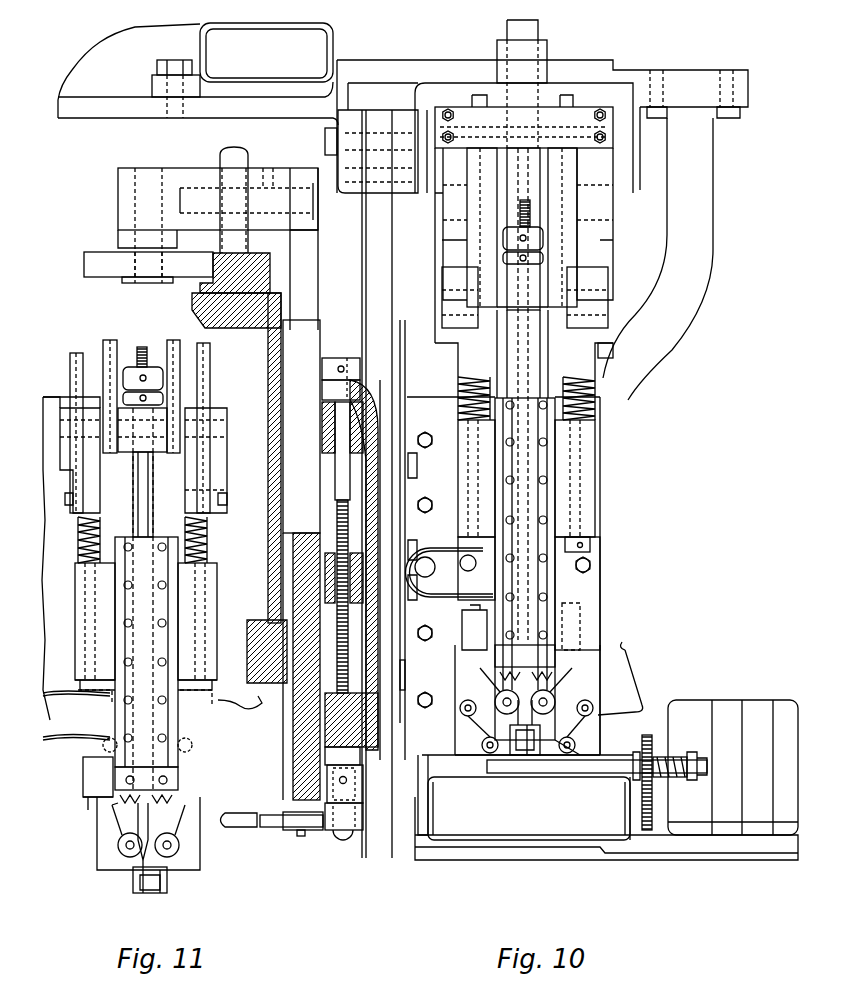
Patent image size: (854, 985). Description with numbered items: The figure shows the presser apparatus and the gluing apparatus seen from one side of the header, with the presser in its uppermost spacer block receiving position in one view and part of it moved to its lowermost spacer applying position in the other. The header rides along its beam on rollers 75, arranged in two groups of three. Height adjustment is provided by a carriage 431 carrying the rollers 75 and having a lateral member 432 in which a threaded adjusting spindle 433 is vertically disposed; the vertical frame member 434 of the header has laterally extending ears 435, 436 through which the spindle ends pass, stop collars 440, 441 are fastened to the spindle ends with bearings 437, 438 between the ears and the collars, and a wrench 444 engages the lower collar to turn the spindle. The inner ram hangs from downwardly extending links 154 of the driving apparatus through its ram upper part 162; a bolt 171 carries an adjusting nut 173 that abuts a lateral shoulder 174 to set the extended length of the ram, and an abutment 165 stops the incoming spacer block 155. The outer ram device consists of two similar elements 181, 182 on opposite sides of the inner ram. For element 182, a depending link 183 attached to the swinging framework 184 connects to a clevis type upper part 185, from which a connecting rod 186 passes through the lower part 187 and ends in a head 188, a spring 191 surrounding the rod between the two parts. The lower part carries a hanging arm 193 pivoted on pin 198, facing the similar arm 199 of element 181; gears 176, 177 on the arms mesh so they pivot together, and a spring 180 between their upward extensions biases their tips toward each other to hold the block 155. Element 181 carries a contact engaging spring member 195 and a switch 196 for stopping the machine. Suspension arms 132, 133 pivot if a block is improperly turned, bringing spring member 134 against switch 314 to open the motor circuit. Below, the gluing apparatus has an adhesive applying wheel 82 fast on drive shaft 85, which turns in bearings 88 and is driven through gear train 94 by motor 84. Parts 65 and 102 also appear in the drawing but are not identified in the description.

In FIG. 11, the frame plate 65 is at (268, 333).
In FIG. 11, the rollers 75 is at (248, 160).
In FIG. 10, the rollers 75 is at (405, 668).
In FIG. 10, the adhesive applying wheel 82 is at (540, 775).
In FIG. 10, the motor 84 is at (735, 700).
In FIG. 10, the drive shaft 85 is at (680, 777).
In FIG. 10, the spaced bearings 88 is at (575, 755).
In FIG. 10, the gear train 94 is at (655, 742).
In FIG. 10, the shaft 102 is at (538, 35).
In FIG. 11, the suspension arm 132 is at (83, 770).
In FIG. 10, the suspension arm 132 is at (470, 733).
In FIG. 11, the suspension arm 133 is at (192, 747).
In FIG. 10, the suspension arm 133 is at (590, 730).
In FIG. 11, the spring member 134 is at (228, 708).
In FIG. 10, the spring member 134 is at (628, 660).
In FIG. 11, the downwardly extending links 154 is at (107, 340).
In FIG. 10, the downwardly extending links 154 is at (490, 197).
In FIG. 11, the spacer block 155 is at (150, 893).
In FIG. 10, the ram upper part 162 is at (560, 358).
In FIG. 11, the abutment 165 is at (133, 878).
In FIG. 10, the abutment 165 is at (524, 760).
In FIG. 11, the bolt 171 is at (140, 347).
In FIG. 10, the bolt 171 is at (526, 200).
In FIG. 11, the adjusting nut 173 is at (155, 367).
In FIG. 10, the adjusting nut 173 is at (543, 258).
In FIG. 11, the lateral shoulder 174 is at (163, 398).
In FIG. 10, the lateral shoulder 174 is at (503, 258).
In FIG. 11, the gear 176 is at (179, 845).
In FIG. 10, the gear 176 is at (568, 695).
In FIG. 11, the gear 177 is at (118, 843).
In FIG. 10, the gear 177 is at (495, 690).
In FIG. 11, the spring 180 is at (180, 800).
In FIG. 10, the spring 180 is at (503, 657).
In FIG. 10, the outer ram element 181 is at (458, 580).
In FIG. 10, the outer ram element 182 is at (600, 578).
In FIG. 11, the depending link 183 is at (72, 353).
In FIG. 10, the depending link 183 is at (455, 240).
In FIG. 10, the swinging framework 184 is at (575, 110).
In FIG. 10, the clevis type upper part 185 is at (600, 290).
In FIG. 11, the connecting rod 186 is at (200, 577).
In FIG. 10, the connecting rod 186 is at (580, 437).
In FIG. 11, the lower part 187 is at (215, 615).
In FIG. 10, the lower part 187 is at (595, 490).
In FIG. 10, the head 188 is at (590, 545).
In FIG. 11, the spring 191 is at (207, 540).
In FIG. 10, the spring 191 is at (458, 388).
In FIG. 11, the hanging arm 193 is at (167, 885).
In FIG. 10, the hanging arm 193 is at (540, 760).
In FIG. 11, the contact engaging spring member 195 is at (80, 740).
In FIG. 10, the contact engaging spring member 195 is at (440, 548).
In FIG. 11, the switch 196 is at (88, 786).
In FIG. 10, the switch 196 is at (462, 612).
In FIG. 10, the pin 198 is at (555, 695).
In FIG. 11, the hanging arm 199 is at (135, 890).
In FIG. 10, the hanging arm 199 is at (514, 760).
In FIG. 10, the switch 314 is at (590, 612).
In FIG. 11, the carriage 431 is at (325, 754).
In FIG. 11, the lateral member 432 is at (300, 580).
In FIG. 11, the threaded adjusting spindle 433 is at (340, 478).
In FIG. 11, the frame member 434 is at (384, 858).
In FIG. 11, the laterally extending ear 435 is at (325, 718).
In FIG. 11, the laterally extending ear 436 is at (322, 435).
In FIG. 11, the bearing 437 is at (322, 392).
In FIG. 11, the bearing 438 is at (327, 775).
In FIG. 11, the stop collar 440 is at (333, 358).
In FIG. 11, the stop collar 441 is at (327, 792).
In FIG. 11, the wrench 444 is at (305, 836).